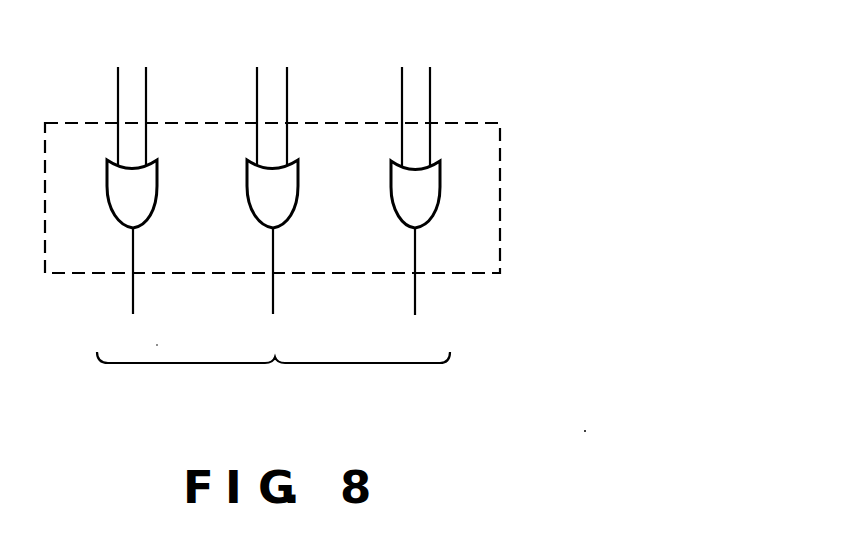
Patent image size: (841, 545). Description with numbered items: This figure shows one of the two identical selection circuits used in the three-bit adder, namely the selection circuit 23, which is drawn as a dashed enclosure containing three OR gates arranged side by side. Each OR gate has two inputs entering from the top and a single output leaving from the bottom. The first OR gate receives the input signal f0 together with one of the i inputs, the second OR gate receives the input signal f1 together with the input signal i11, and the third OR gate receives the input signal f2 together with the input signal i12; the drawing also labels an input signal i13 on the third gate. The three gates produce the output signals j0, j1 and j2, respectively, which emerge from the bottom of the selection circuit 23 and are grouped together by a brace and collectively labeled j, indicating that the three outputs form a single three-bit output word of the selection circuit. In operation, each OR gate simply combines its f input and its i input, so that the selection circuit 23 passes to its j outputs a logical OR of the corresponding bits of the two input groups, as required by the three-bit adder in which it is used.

The selection circuit 23 is at (360, 34).
The input signal f0 is at (113, 99).
The input signal f1 is at (251, 99).
The input signal f2 is at (395, 99).
The input signal i11 is at (153, 99).
The input signal i12 is at (295, 99).
The input signal i13 is at (437, 99).
The output signal j0 is at (129, 290).
The output signal j1 is at (272, 290).
The output signal j2 is at (418, 290).
The output signal group j is at (273, 380).